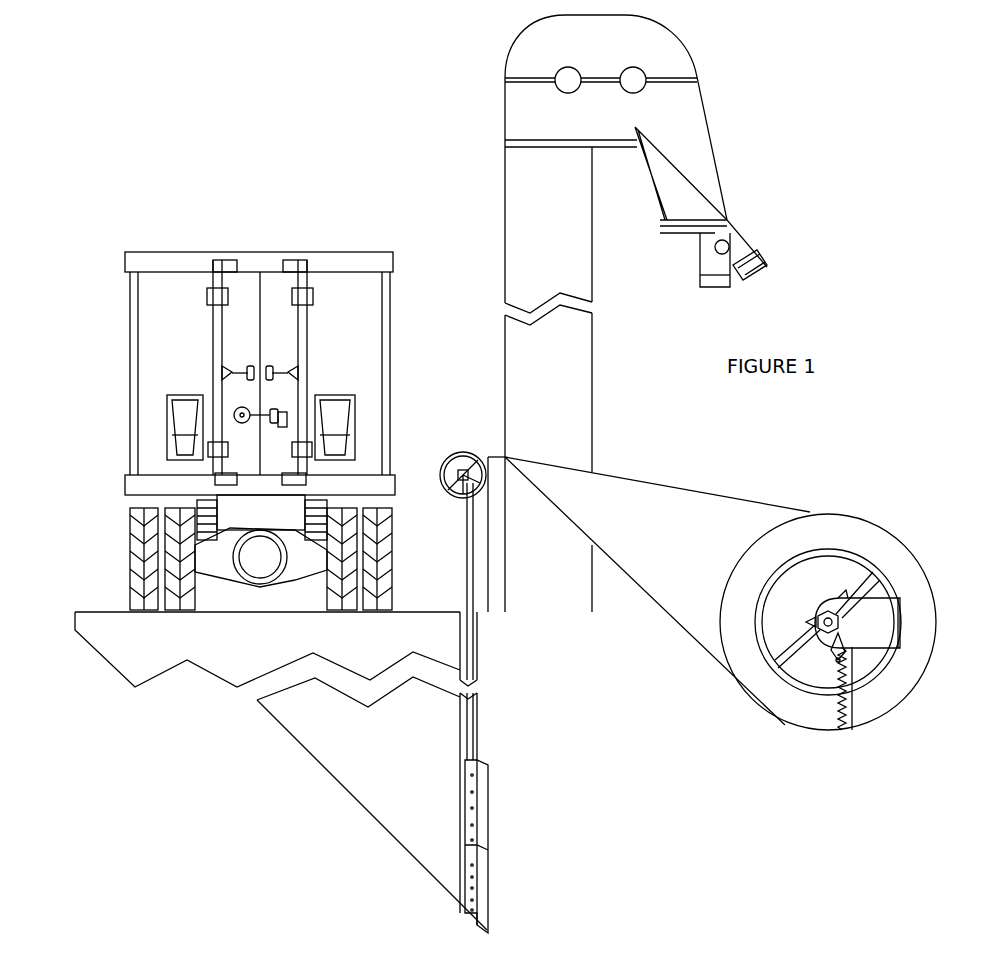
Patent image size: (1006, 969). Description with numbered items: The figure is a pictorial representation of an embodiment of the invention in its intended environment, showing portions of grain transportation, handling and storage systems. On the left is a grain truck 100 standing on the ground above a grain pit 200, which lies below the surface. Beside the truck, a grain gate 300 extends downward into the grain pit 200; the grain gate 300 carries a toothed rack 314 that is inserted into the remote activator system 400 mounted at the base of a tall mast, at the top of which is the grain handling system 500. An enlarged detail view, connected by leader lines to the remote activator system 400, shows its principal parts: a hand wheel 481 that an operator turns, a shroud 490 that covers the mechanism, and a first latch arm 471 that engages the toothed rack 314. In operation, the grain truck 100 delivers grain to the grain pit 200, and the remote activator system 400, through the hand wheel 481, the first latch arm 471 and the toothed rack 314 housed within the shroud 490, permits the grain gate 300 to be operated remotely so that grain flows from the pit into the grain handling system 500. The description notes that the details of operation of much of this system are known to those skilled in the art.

The grain truck 100 is at (222, 236).
The grain pit 200 is at (378, 760).
The grain gate 300 is at (502, 792).
The remote activator system 400 is at (451, 428).
The grain handling system 500 is at (766, 223).
The hand wheel 481 is at (828, 550).
The shroud 490 is at (872, 622).
The toothed rack 314 is at (848, 695).
The first latch arm 471 is at (828, 648).